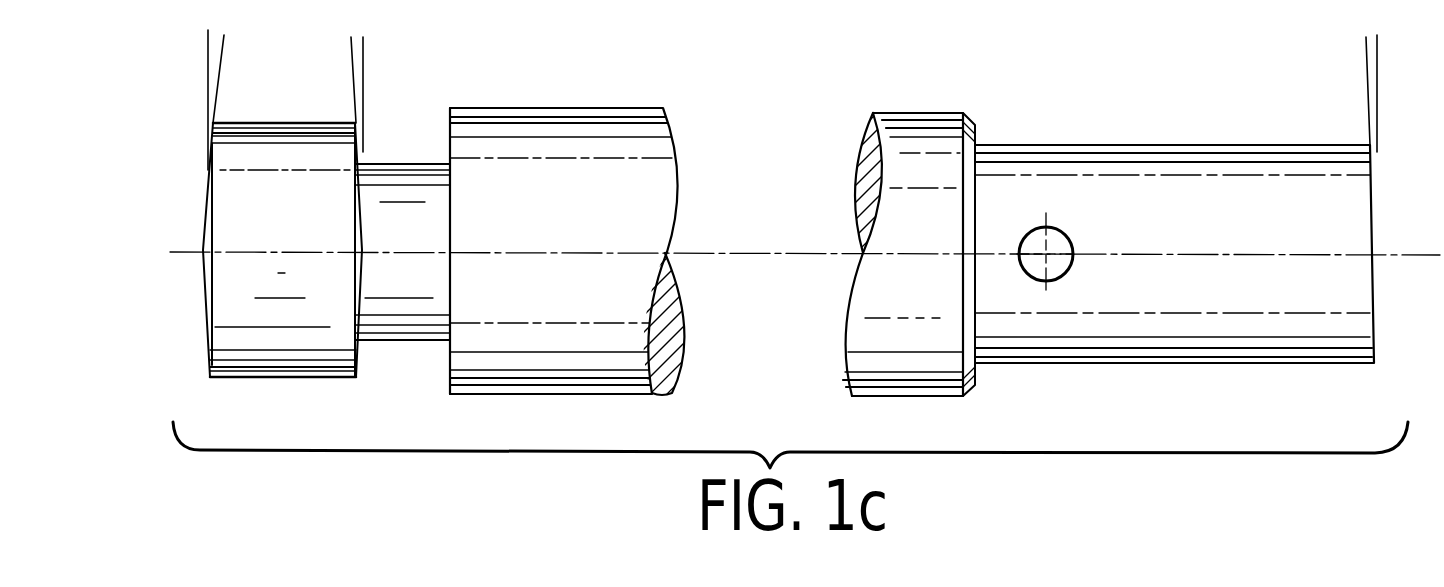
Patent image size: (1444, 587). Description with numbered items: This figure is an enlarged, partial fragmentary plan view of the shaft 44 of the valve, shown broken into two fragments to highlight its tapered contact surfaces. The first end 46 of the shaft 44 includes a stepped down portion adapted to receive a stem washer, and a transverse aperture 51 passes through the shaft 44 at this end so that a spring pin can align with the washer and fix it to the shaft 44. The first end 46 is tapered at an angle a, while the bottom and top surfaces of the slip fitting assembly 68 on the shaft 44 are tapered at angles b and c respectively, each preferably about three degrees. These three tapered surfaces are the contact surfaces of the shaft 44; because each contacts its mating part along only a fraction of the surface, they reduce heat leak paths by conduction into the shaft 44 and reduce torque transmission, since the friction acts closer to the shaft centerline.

The shaft 44 is at (597, 110).
The first end 46 is at (1375, 292).
The transverse aperture 51 is at (1070, 235).
The slip fitting assembly 68 is at (308, 378).
The taper angle of first end a is at (1422, 62).
The taper angle of bottom surface of slip fitting assembly b is at (315, 60).
The taper angle of top surface of slip fitting assembly c is at (268, 67).